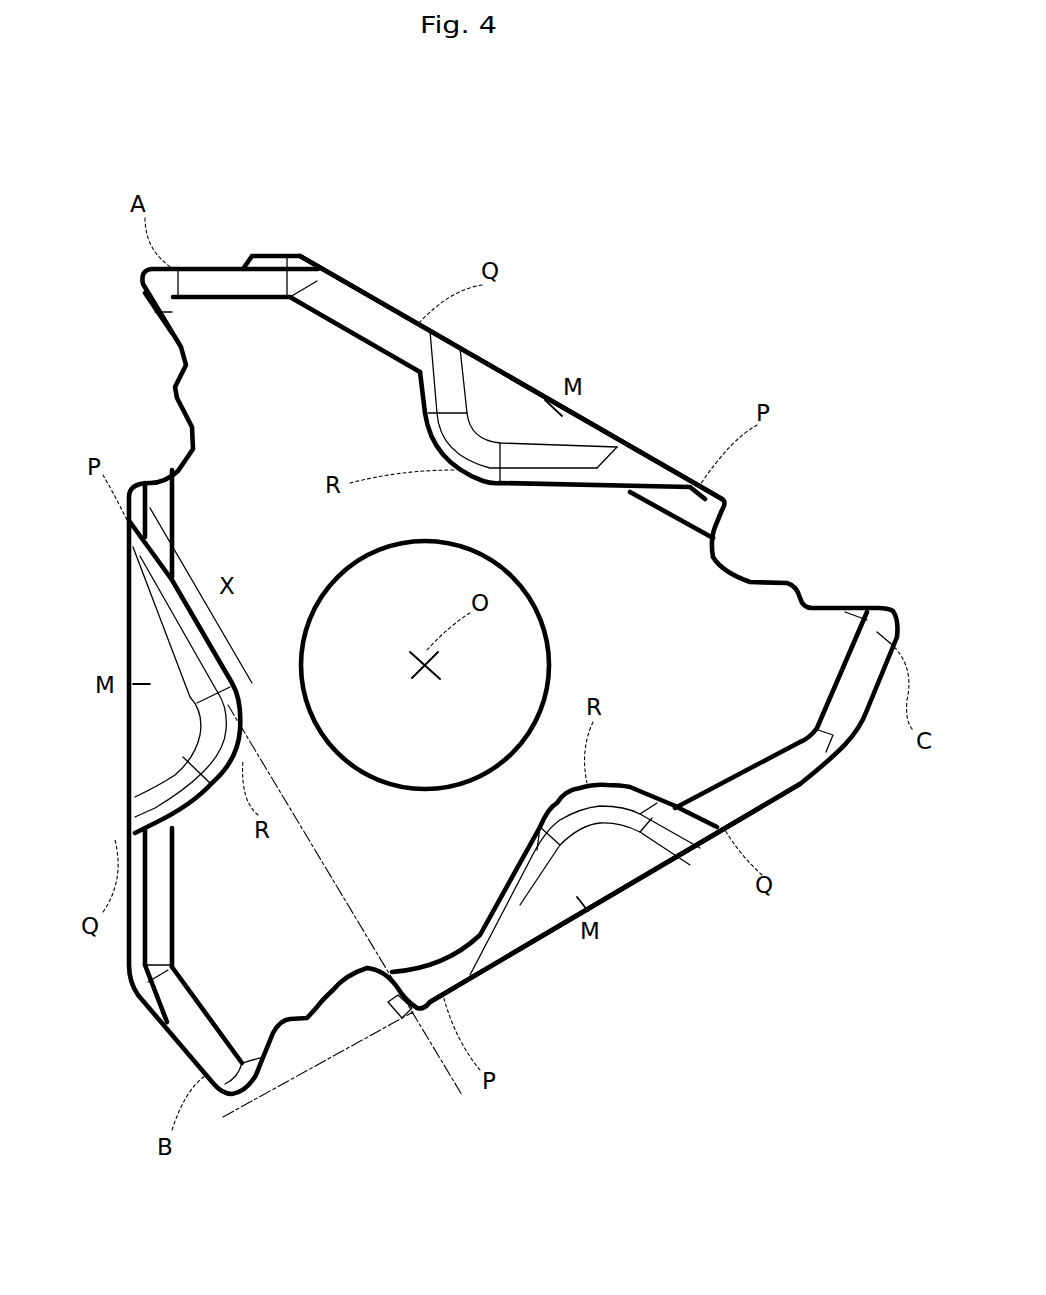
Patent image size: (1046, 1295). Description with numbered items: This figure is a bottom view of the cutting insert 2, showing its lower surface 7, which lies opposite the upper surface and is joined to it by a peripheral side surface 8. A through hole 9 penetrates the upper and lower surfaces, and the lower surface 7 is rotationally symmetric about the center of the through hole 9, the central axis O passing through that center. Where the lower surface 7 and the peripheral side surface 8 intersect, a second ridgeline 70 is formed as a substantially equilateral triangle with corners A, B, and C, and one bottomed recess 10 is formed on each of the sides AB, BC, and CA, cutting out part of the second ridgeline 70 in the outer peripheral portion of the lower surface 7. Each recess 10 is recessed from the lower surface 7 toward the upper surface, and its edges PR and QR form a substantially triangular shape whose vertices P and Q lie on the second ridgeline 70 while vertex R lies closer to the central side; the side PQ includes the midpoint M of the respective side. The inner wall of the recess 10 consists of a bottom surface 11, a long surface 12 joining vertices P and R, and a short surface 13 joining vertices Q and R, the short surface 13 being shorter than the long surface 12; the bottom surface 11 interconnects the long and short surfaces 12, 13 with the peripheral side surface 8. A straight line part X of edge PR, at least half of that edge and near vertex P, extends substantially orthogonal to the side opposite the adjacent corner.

The cutting insert 2 is at (541, 1178).
The lower surface 7 is at (293, 356).
The second ridgeline 70 is at (357, 287).
The peripheral side surface 8 is at (400, 303).
The through hole 9 is at (547, 660).
The recess 10 is at (548, 462).
The bottom surface 11 is at (567, 427).
The long surface 12 is at (593, 467).
The short surface 13 is at (420, 380).